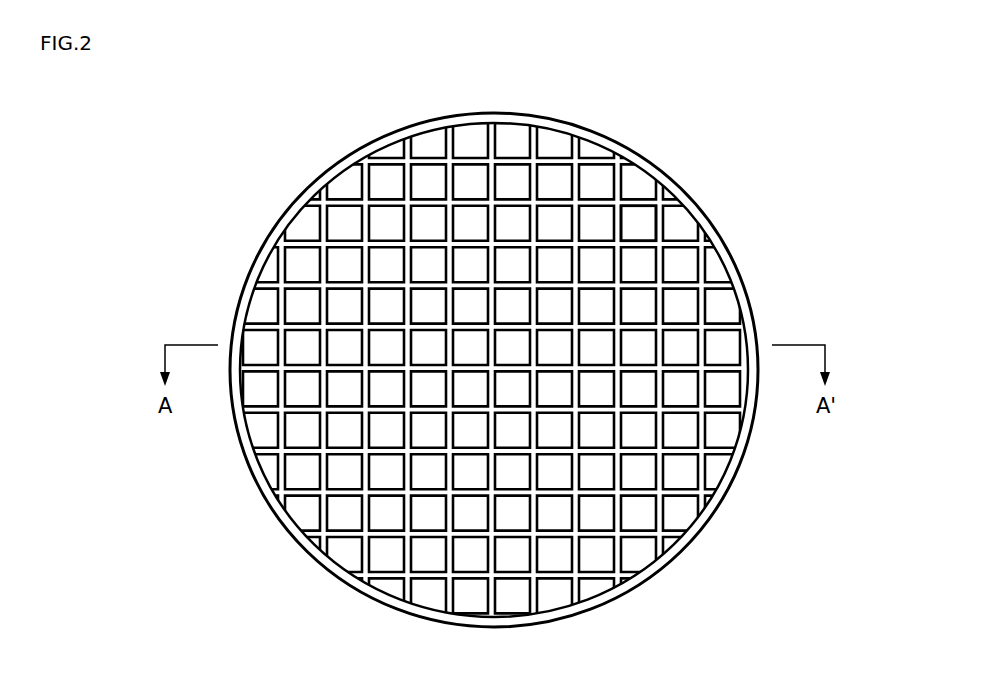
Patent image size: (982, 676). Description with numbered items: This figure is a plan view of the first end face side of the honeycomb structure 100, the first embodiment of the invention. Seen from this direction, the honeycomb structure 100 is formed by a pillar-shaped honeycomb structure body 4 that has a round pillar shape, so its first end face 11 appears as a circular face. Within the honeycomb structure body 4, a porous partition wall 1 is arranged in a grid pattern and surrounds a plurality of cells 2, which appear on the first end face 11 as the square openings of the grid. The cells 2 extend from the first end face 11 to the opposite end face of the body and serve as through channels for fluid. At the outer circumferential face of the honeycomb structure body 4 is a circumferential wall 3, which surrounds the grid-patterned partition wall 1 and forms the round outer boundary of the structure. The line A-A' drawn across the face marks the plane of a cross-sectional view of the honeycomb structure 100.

The honeycomb structure 100 is at (813, 82).
The first end face 11 is at (310, 164).
The partition wall 1 is at (593, 202).
The cells 2 is at (637, 220).
The circumferential wall 3 is at (702, 522).
The honeycomb structure body 4 is at (762, 315).